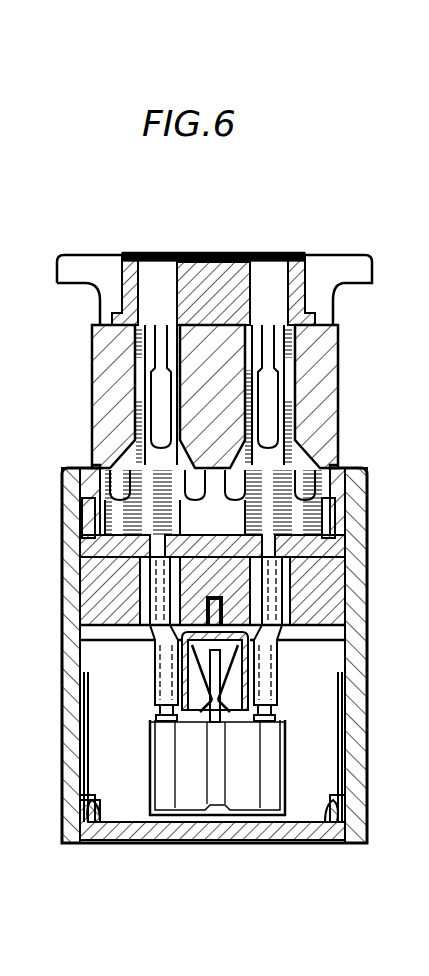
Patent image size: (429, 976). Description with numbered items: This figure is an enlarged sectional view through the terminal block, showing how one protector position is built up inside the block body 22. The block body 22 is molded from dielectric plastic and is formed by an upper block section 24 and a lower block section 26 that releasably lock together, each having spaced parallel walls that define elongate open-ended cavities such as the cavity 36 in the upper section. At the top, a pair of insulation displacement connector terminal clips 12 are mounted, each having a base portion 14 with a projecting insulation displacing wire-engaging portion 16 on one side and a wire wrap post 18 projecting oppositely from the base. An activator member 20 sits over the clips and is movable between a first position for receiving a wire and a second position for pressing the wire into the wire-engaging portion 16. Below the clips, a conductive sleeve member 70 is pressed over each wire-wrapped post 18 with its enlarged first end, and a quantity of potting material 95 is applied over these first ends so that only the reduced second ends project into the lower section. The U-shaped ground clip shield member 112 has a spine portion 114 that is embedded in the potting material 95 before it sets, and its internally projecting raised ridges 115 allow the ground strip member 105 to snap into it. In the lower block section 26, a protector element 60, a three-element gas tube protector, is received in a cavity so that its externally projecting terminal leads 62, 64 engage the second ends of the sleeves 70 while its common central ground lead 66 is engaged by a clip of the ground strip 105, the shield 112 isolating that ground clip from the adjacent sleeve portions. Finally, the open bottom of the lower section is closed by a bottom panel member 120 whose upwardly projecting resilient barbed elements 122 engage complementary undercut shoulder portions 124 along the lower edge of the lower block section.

The activator member 20 is at (210, 262).
The insulation displacement connector terminal clip 12 is at (125, 415).
The insulation displacing wire-engaging portion 16 is at (130, 352).
The elongate open-ended cavity 36 is at (128, 437).
The base portion 14 is at (98, 470).
The block body 22 is at (392, 360).
The upper block section 24 is at (80, 507).
The wire wrap post 18 is at (66, 556).
The potting material 95 is at (360, 578).
The spine portion 114 is at (214, 598).
The conductive sleeve member 70 is at (150, 640).
The internally projecting raised ridge 115 is at (185, 682).
The ground strip member 105 is at (205, 690).
The ground clip shield member 112 is at (262, 690).
The common central ground lead 66 is at (160, 710).
The terminal lead 64 is at (271, 712).
The terminal lead 62 is at (160, 720).
The lower block section 26 is at (62, 730).
The protector element 60 is at (200, 793).
The bottom panel member 120 is at (140, 842).
The resilient barbed element 122 is at (85, 800).
The shoulder portion 124 is at (82, 818).